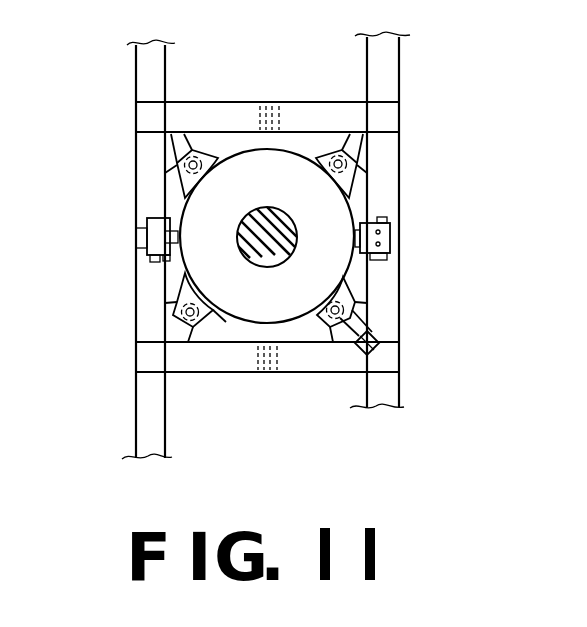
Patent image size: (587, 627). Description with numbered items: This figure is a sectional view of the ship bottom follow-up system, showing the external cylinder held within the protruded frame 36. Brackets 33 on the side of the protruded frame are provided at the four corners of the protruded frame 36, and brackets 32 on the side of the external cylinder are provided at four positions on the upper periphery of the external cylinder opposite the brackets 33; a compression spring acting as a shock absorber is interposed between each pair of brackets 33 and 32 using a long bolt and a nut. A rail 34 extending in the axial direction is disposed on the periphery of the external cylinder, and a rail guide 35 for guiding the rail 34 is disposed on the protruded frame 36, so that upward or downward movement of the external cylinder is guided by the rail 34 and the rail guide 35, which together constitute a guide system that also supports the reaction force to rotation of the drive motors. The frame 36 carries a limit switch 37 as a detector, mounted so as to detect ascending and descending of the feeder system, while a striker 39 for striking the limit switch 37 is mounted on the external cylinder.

The bracket on the side of the external cylinder 32 is at (315, 156).
The bracket on the side of the protruded frame 33 is at (172, 148).
The rail 34 is at (148, 216).
The rail guide 35 is at (160, 268).
The protruded frame 36 is at (383, 172).
The limit switch 37 is at (378, 350).
The striker 39 is at (348, 323).